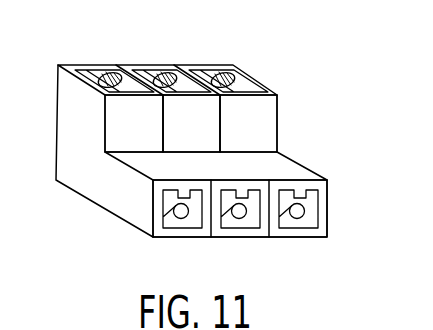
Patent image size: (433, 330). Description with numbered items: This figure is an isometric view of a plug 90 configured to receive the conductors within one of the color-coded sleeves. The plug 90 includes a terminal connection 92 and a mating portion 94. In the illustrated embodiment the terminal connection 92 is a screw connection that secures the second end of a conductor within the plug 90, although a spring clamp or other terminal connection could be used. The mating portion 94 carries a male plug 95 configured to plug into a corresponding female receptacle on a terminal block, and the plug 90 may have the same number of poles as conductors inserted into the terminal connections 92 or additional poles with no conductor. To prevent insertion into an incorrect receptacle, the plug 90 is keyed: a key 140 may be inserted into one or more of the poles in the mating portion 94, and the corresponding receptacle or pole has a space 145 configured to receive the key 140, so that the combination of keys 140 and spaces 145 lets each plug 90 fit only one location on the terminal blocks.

The plug 90 is at (276, 63).
The terminal connection 92 is at (212, 66).
The mating portion 94 is at (332, 194).
The male plug 95 is at (293, 221).
The key 140 is at (183, 194).
The space 145 is at (240, 194).